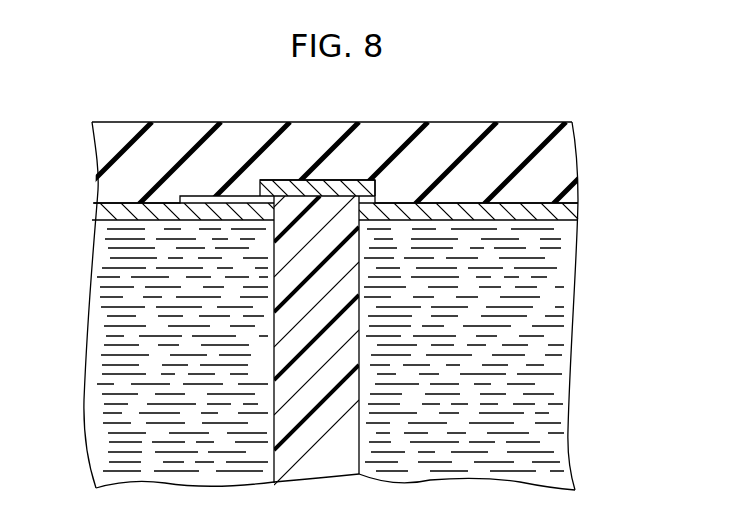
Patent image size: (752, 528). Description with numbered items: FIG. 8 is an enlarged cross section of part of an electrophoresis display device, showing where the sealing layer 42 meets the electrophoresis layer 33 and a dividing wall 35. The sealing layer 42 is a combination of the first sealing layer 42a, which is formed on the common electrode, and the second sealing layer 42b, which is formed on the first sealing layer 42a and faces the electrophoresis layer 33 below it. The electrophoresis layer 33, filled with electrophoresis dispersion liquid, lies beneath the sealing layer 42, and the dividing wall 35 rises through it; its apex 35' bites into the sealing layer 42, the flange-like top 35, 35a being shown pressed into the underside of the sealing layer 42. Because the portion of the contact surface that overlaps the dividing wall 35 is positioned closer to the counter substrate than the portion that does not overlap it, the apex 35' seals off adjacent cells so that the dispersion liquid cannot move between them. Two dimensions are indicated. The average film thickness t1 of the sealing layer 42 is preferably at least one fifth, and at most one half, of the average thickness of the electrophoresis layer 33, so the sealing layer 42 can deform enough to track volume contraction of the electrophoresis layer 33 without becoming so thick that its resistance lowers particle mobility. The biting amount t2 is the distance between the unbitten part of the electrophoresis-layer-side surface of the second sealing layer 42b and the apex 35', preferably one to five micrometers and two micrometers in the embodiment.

The electrophoresis layer 33 is at (560, 342).
The dividing wall 35 is at (294, 285).
The flange portion 35a is at (317, 188).
The apex of the dividing wall 35' is at (317, 141).
The sealing layer 42 is at (672, 155).
The first sealing layer 42a is at (563, 165).
The second sealing layer 42b is at (570, 210).
The average film thickness of the sealing layer t1 is at (38, 122).
The biting amount t2 is at (195, 231).